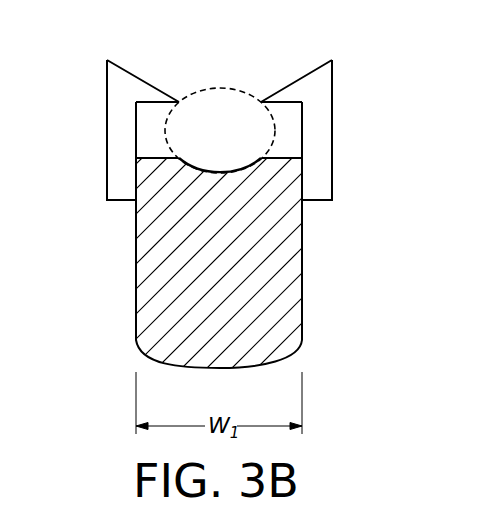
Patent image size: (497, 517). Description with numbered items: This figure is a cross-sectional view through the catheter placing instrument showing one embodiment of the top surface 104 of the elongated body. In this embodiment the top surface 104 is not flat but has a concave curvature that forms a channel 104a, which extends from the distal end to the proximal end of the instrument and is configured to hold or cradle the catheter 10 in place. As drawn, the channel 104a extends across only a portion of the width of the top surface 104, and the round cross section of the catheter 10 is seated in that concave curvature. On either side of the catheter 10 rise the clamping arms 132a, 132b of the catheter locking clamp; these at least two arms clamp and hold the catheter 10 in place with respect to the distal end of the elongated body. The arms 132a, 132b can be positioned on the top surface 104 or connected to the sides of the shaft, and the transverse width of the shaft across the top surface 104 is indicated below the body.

The catheter 10 is at (213, 88).
The top surface 104 is at (155, 160).
The channel 104a is at (211, 173).
The clamping arm 132a is at (335, 120).
The clamping arm 132b is at (107, 107).